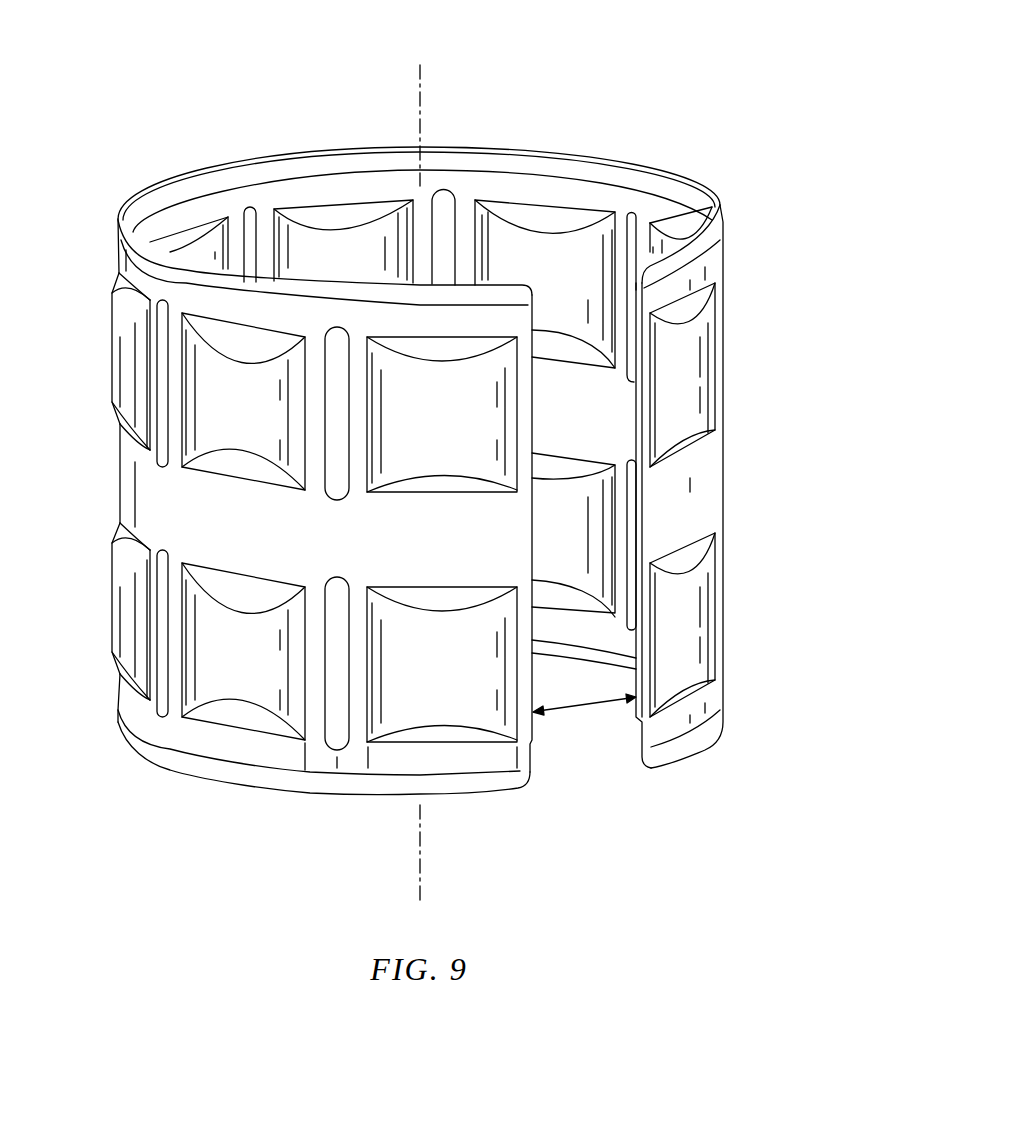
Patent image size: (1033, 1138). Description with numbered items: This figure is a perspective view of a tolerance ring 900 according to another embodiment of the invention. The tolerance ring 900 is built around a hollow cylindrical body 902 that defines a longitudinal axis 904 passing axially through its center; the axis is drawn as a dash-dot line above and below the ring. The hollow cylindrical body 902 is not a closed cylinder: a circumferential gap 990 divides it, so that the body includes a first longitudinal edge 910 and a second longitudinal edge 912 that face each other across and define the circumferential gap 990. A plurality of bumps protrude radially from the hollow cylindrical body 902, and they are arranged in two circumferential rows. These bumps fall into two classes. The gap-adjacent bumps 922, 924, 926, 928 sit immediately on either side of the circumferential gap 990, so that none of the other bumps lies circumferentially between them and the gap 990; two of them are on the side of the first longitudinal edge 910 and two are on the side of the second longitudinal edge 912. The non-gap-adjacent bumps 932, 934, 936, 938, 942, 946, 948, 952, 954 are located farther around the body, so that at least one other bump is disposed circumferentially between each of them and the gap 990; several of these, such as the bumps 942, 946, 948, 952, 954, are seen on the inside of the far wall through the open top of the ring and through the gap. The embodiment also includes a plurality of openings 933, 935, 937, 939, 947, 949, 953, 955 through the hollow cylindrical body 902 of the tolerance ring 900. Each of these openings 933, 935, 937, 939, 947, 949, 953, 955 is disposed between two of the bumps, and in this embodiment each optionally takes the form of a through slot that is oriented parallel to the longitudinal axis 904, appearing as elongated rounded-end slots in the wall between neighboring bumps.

The tolerance ring 900 is at (603, 63).
The hollow cylindrical body 902 is at (724, 466).
The longitudinal axis 904 is at (419, 72).
The first longitudinal edge 910 is at (534, 388).
The second longitudinal edge 912 is at (635, 418).
The gap-adjacent bump 922 is at (412, 458).
The gap-adjacent bump 924 is at (477, 625).
The gap-adjacent bump 926 is at (698, 372).
The gap-adjacent bump 928 is at (698, 631).
The non-gap-adjacent bump 932 is at (228, 455).
The opening 933 is at (329, 482).
The non-gap-adjacent bump 934 is at (240, 596).
The opening 935 is at (345, 597).
The non-gap-adjacent bump 936 is at (118, 327).
The opening 937 is at (163, 469).
The non-gap-adjacent bump 938 is at (118, 580).
The opening 939 is at (163, 720).
The non-gap-adjacent bump 942 is at (212, 217).
The non-gap-adjacent bump 946 is at (352, 240).
The opening 947 is at (250, 205).
The non-gap-adjacent bump 948 is at (578, 235).
The opening 949 is at (448, 192).
The non-gap-adjacent bump 952 is at (658, 230).
The opening 953 is at (633, 216).
The non-gap-adjacent bump 954 is at (545, 526).
The opening 955 is at (634, 520).
The circumferential gap 990 is at (584, 703).